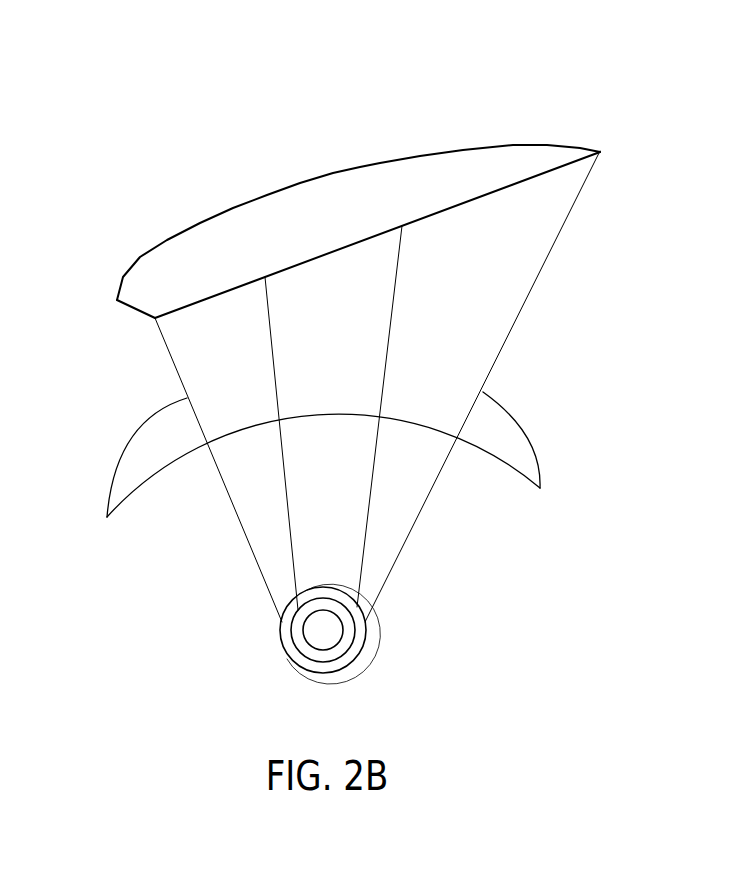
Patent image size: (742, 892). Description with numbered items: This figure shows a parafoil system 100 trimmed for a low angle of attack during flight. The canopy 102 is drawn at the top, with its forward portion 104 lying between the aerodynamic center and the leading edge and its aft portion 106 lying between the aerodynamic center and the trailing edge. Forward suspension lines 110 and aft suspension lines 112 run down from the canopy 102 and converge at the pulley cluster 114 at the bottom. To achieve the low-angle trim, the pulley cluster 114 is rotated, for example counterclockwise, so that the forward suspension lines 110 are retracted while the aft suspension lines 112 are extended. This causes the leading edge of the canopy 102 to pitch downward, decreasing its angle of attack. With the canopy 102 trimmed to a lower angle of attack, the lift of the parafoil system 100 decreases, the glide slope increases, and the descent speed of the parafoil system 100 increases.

The parafoil system 100 is at (390, 82).
The canopy 102 is at (265, 220).
The forward portion 104 is at (182, 258).
The aft portion 106 is at (453, 180).
The forward suspension lines 110 is at (184, 470).
The aft suspension lines 112 is at (335, 457).
The pulley cluster 114 is at (277, 635).